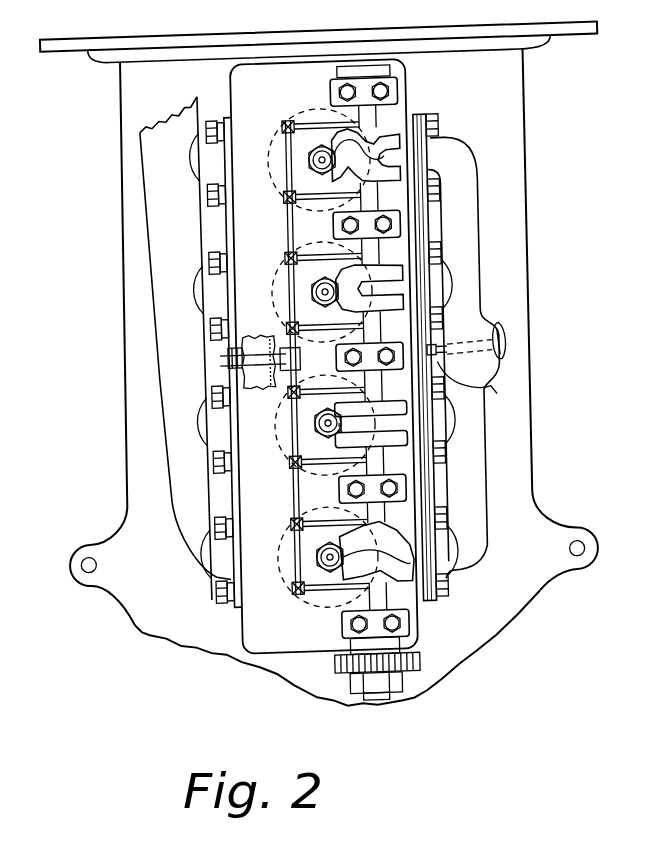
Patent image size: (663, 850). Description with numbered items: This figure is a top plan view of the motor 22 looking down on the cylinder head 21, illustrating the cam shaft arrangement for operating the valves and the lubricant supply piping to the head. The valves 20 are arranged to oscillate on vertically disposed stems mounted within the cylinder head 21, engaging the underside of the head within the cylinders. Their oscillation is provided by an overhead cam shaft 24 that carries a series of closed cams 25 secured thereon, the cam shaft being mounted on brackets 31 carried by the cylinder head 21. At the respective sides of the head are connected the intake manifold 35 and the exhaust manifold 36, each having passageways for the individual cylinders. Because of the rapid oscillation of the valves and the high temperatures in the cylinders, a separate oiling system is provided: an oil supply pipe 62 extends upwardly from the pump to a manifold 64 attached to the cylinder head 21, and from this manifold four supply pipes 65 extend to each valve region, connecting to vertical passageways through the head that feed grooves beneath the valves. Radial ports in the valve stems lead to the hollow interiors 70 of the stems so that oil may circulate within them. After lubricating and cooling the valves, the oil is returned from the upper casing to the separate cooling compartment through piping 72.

The valves 20 is at (312, 567).
The cylinder head 21 is at (244, 629).
The motor 22 is at (148, 432).
The overhead cam shaft 24 is at (370, 126).
The closed cams 25 is at (338, 298).
The brackets 31 is at (382, 354).
The intake manifold 35 is at (174, 493).
The exhaust manifold 36 is at (467, 502).
The oil supply pipe 62 is at (227, 360).
The manifold 64 is at (298, 427).
The supply pipes 65 is at (332, 465).
The hollow interiors 70 is at (290, 459).
The piping 72 is at (474, 368).